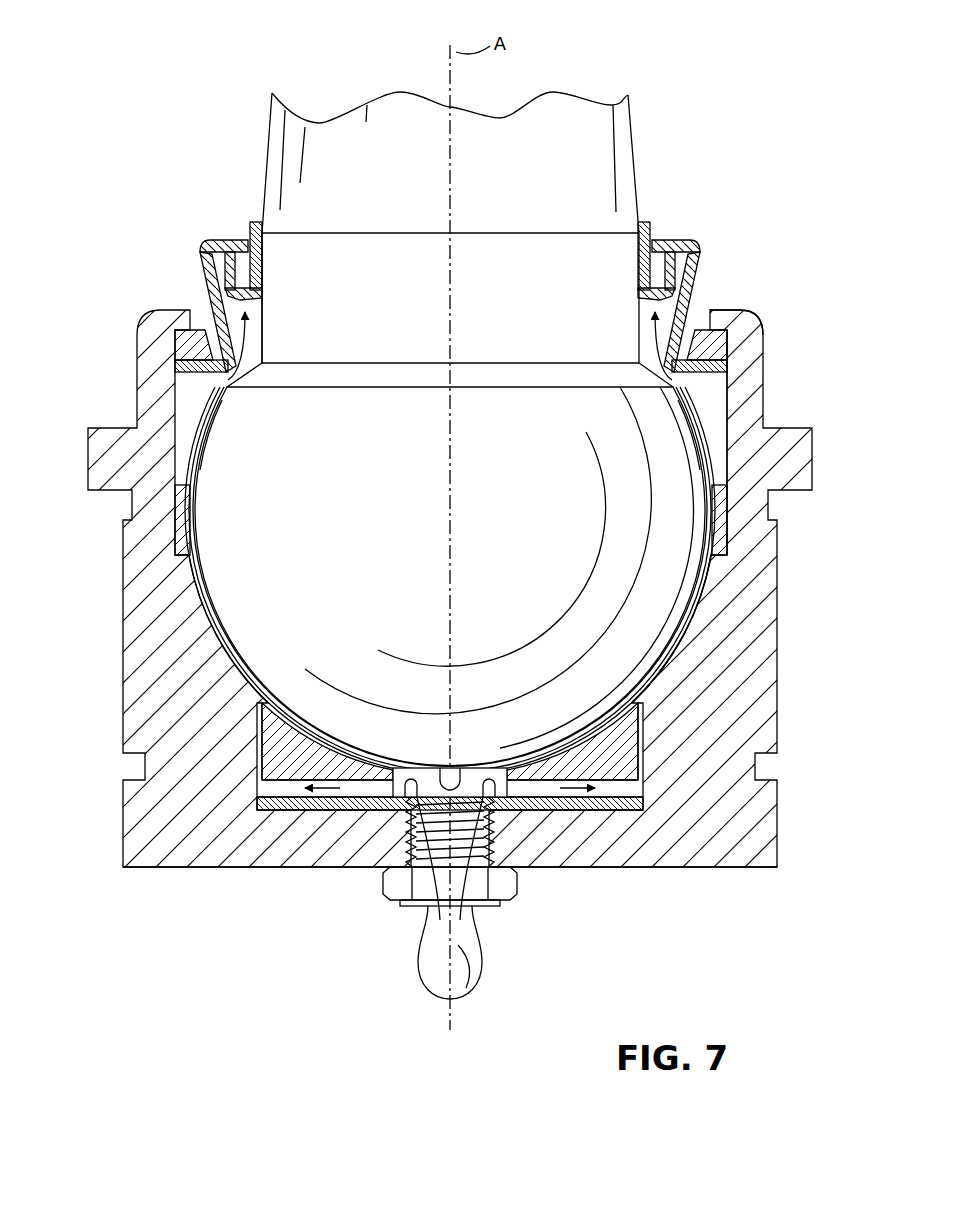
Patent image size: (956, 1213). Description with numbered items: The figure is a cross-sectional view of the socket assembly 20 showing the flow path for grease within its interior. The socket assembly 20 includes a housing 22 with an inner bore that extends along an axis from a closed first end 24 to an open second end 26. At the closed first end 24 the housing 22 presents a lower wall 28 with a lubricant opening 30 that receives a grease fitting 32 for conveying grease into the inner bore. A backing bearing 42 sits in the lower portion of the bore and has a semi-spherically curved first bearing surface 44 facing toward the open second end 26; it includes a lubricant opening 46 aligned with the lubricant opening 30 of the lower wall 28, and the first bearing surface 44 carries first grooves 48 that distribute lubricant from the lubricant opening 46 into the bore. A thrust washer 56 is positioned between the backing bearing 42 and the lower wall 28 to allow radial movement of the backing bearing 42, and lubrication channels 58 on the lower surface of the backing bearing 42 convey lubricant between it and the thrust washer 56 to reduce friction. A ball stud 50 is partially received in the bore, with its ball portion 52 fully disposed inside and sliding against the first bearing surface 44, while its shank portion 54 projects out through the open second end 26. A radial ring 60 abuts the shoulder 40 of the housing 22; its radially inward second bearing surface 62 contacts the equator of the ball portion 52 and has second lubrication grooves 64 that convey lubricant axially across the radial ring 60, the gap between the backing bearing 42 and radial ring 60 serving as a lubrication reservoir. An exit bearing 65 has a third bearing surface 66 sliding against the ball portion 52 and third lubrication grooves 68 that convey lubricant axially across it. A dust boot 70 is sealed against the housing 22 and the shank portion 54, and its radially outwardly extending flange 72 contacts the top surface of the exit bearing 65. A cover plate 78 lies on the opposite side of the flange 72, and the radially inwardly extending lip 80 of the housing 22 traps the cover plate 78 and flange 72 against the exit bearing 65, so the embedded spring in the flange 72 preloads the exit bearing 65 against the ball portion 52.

The socket assembly 20 is at (715, 163).
The housing 22 is at (120, 575).
The closed first end 24 is at (593, 792).
The open second end 26 is at (702, 310).
The lower wall 28 is at (287, 848).
The lubricant opening 30 is at (425, 868).
The grease fitting 32 is at (470, 975).
The shoulder 40 is at (722, 557).
The backing bearing 42 is at (618, 772).
The first bearing surface 44 is at (348, 738).
The lubricant opening 46 is at (415, 792).
The first grooves 48 is at (398, 770).
The ball stud 50 is at (640, 140).
The ball portion 52 is at (509, 503).
The shank portion 54 is at (387, 203).
The thrust washer 56 is at (287, 808).
The lubrication channels 58 is at (270, 790).
The radial ring 60 is at (720, 520).
The second bearing surface 62 is at (191, 517).
The second lubrication grooves 64 is at (193, 548).
The exit bearing 65 is at (733, 420).
The third bearing surface 66 is at (218, 425).
The third lubrication grooves 68 is at (687, 425).
The dust boot 70 is at (703, 240).
The radially outwardly extending flange 72 is at (705, 348).
The cover plate 78 is at (198, 347).
The radially inwardly extending lip 80 is at (213, 302).